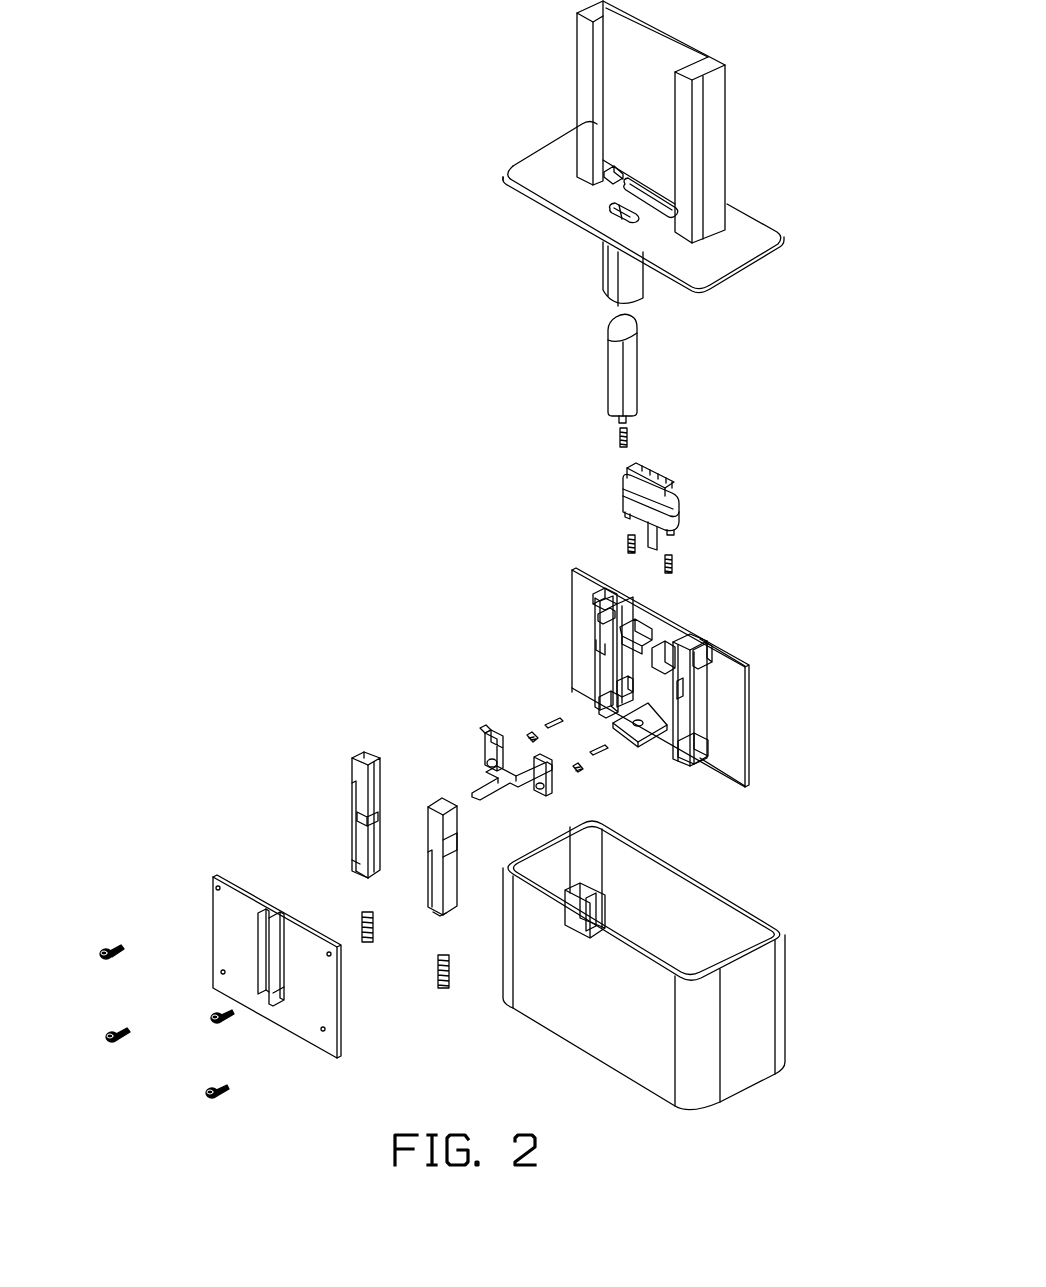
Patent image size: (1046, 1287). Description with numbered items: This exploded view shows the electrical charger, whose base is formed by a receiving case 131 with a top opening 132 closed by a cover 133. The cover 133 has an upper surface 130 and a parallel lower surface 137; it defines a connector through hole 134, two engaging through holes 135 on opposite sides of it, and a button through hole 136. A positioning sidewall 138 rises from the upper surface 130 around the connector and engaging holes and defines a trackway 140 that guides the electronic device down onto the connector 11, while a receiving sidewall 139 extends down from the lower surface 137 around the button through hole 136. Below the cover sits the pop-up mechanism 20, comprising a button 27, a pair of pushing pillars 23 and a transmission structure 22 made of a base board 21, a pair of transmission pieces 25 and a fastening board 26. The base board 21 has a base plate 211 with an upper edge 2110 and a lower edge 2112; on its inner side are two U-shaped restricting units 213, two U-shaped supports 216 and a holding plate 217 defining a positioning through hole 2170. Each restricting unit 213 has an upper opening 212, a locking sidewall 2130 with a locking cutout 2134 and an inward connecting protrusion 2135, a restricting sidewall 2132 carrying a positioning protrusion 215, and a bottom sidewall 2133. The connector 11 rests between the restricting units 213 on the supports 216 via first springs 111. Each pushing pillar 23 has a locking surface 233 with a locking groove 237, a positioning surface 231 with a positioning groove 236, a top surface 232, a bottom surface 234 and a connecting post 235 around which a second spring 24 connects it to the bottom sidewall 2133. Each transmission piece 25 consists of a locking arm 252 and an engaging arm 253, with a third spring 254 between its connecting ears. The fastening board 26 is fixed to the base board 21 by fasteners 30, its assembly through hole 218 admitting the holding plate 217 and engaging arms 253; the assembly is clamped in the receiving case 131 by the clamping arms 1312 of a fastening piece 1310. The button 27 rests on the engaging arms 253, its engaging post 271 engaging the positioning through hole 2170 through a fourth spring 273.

The connector 11 is at (650, 484).
The first springs 111 is at (673, 565).
The pop-up mechanism 20 is at (248, 628).
The base board 21 is at (772, 768).
The transmission structure 22 is at (472, 632).
The pushing pillars 23 is at (160, 722).
The second spring 24 is at (377, 940).
The transmission pieces 25 is at (358, 667).
The fastening board 26 is at (338, 1030).
The button 27 is at (617, 372).
The fasteners 30 is at (212, 1015).
The upper surface 130 is at (535, 180).
The receiving case 131 is at (760, 993).
The top opening 132 is at (740, 933).
The cover 133 is at (767, 205).
The connector through hole 134 is at (647, 184).
The engaging through holes 135 is at (606, 168).
The button through hole 136 is at (617, 211).
The lower surface 137 is at (566, 227).
The positioning sidewall 138 is at (715, 95).
The receiving sidewall 139 is at (628, 285).
The trackway 140 is at (654, 52).
The base plate 211 is at (748, 737).
The upper opening 212 is at (603, 598).
The restricting units 213 is at (582, 642).
The positioning protrusion 215 is at (610, 620).
The supports 216 is at (647, 630).
The holding plate 217 is at (640, 733).
The assembly through hole 218 is at (282, 1003).
The positioning surface 231 is at (352, 820).
The top surface 232 is at (362, 756).
The locking surface 233 is at (377, 787).
The bottom surface 234 is at (360, 873).
The connecting post 235 is at (367, 880).
The positioning groove 236 is at (455, 848).
The locking groove 237 is at (368, 818).
The locking arm 252 is at (490, 747).
The engaging arm 253 is at (487, 790).
The third spring 254 is at (582, 766).
The engaging post 271 is at (617, 416).
The fourth spring 273 is at (620, 437).
The fastening piece 1310 is at (616, 916).
The clamping arms 1312 is at (610, 907).
The upper edge 2110 is at (742, 657).
The lower edge 2112 is at (720, 774).
The locking sidewall 2130 is at (594, 592).
The restricting sidewall 2132 is at (598, 594).
The bottom sidewall 2133 is at (690, 765).
The locking cutout 2134 is at (673, 693).
The connecting protrusion 2135 is at (622, 686).
The positioning through hole 2170 is at (613, 732).